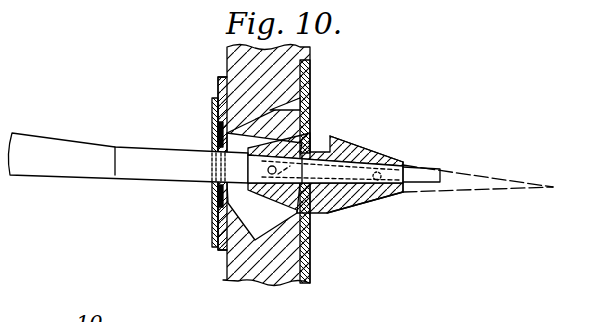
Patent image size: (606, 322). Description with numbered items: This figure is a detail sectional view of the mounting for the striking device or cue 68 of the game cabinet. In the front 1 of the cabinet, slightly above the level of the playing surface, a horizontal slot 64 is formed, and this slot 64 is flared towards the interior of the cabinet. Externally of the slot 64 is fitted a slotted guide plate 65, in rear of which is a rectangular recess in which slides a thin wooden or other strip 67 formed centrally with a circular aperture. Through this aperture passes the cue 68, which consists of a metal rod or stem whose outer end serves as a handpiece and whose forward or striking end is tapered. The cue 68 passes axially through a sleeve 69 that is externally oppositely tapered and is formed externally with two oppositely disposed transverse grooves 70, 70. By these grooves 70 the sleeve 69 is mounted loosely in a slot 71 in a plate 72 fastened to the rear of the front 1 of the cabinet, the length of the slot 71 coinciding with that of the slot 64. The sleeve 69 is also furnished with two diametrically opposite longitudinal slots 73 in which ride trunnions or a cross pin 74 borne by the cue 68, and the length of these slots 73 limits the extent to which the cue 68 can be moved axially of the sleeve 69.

The front of the cabinet 1 is at (255, 240).
The horizontal slot 64 is at (312, 108).
The slotted guide plate 65 is at (212, 106).
The strip 67 is at (212, 194).
The striking device or cue 68 is at (60, 160).
The sleeve 69 is at (373, 205).
The transverse grooves 70 is at (333, 139).
The slot in plate 71 is at (309, 144).
The plate 72 is at (311, 255).
The longitudinal slots 73 is at (212, 232).
The cross pin 74 is at (228, 165).